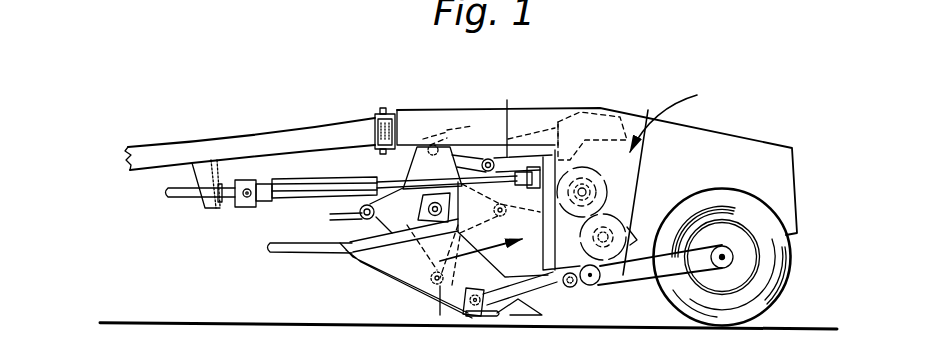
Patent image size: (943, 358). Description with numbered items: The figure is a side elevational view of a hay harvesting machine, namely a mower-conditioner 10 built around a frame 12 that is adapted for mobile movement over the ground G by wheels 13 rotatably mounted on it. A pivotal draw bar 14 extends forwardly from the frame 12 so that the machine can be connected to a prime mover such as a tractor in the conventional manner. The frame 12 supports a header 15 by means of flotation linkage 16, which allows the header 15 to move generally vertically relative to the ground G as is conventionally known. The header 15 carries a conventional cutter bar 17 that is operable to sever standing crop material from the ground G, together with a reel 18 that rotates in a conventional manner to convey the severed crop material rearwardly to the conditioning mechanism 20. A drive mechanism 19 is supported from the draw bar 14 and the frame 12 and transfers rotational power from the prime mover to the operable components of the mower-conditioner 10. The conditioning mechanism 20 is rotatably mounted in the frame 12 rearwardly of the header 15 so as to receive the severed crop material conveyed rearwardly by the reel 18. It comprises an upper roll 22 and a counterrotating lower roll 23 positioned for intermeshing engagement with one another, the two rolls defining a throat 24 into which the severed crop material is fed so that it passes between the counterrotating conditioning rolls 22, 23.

The mower-conditioner 10 is at (190, 74).
The frame 12 is at (615, 112).
The wheels 13 is at (783, 275).
The draw bar 14 is at (224, 142).
The header 15 is at (278, 282).
The flotation linkage 16 is at (507, 100).
The cutter bar 17 is at (480, 320).
The reel 18 is at (417, 175).
The drive mechanism 19 is at (247, 208).
The conditioning mechanism 20 is at (676, 118).
The upper roll 22 is at (638, 175).
The lower roll 23 is at (633, 195).
The throat 24 is at (347, 288).
The ground G is at (138, 321).